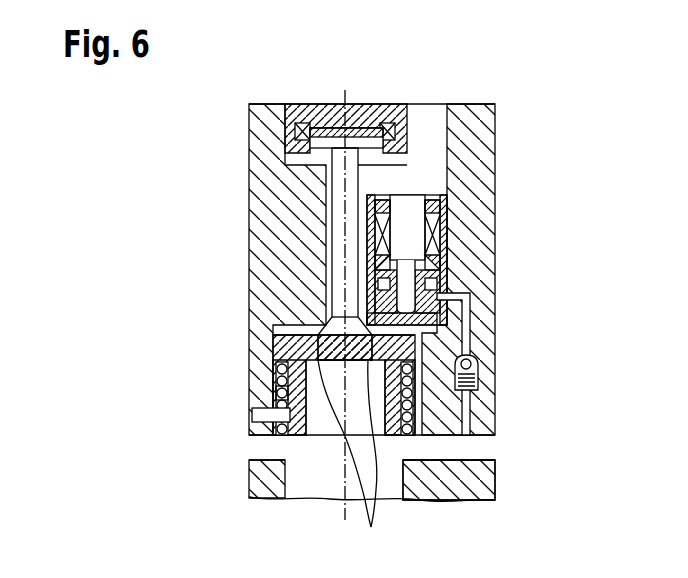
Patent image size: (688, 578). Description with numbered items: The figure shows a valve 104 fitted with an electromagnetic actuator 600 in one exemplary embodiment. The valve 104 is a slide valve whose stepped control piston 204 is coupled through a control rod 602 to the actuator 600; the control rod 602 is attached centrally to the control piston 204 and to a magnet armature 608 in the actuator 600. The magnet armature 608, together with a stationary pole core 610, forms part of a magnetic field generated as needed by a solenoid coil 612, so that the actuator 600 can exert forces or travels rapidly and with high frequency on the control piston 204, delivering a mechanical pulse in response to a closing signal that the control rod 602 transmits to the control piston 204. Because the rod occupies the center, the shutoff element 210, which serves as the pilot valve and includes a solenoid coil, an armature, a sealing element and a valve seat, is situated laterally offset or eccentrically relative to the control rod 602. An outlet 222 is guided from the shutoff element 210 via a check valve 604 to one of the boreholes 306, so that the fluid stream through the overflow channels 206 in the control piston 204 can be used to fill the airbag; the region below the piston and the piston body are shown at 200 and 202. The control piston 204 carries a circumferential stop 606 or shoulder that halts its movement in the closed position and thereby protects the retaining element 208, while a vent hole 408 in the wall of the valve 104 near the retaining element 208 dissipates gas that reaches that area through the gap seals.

The valve 104 is at (138, 154).
The chamber 200 is at (330, 449).
The piston 202 is at (284, 326).
The control piston 204 is at (280, 346).
The overflow channels 206 is at (353, 459).
The retaining element 208 is at (281, 371).
The shutoff element 210 is at (415, 241).
The outlet 222 is at (468, 327).
The boreholes 306 is at (470, 450).
The vent hole 408 is at (258, 412).
The actuator 600 is at (297, 109).
The control rod 602 is at (340, 232).
The check valve 604 is at (481, 371).
The stop 606 is at (272, 393).
The magnet armature 608 is at (356, 141).
The pole core 610 is at (315, 118).
The solenoid coil 612 is at (409, 122).